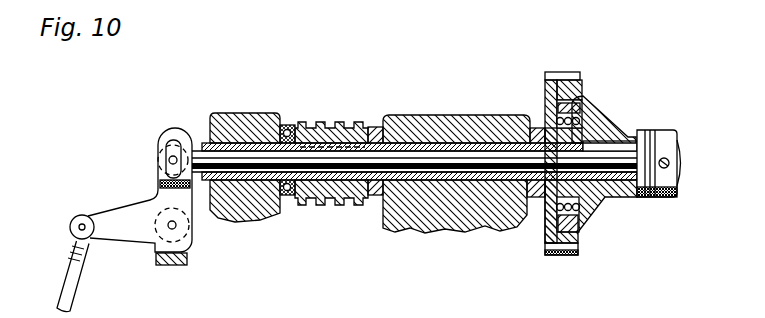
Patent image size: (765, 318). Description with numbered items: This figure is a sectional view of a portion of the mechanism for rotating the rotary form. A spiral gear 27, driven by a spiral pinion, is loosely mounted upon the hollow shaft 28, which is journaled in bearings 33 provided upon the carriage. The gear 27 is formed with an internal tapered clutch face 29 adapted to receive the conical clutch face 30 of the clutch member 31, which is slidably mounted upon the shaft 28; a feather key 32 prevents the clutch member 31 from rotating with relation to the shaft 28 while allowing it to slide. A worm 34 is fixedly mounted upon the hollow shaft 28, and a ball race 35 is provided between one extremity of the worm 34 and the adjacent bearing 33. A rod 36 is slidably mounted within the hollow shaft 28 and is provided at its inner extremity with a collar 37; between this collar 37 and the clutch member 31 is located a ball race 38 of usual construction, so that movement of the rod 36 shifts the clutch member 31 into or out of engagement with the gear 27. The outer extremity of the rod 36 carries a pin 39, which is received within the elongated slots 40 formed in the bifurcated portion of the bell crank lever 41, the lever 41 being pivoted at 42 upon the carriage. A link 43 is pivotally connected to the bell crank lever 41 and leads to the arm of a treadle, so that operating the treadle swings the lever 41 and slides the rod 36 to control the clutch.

The spiral gear 27 is at (553, 83).
The hollow shaft 28 is at (470, 147).
The internal tapered clutch face 29 is at (580, 85).
The conical clutch face 30 is at (597, 120).
The clutch member 31 is at (618, 145).
The feather key 32 is at (640, 132).
The bearings 33 is at (250, 117).
The worm 34 is at (318, 122).
The ball race 35 is at (293, 192).
The rod 36 is at (388, 202).
The collar 37 is at (672, 146).
The ball race 38 is at (645, 197).
The pin 39 is at (168, 157).
The elongated slots 40 is at (173, 140).
The bell crank lever 41 is at (125, 215).
The pivot 42 is at (175, 227).
The link 43 is at (72, 282).